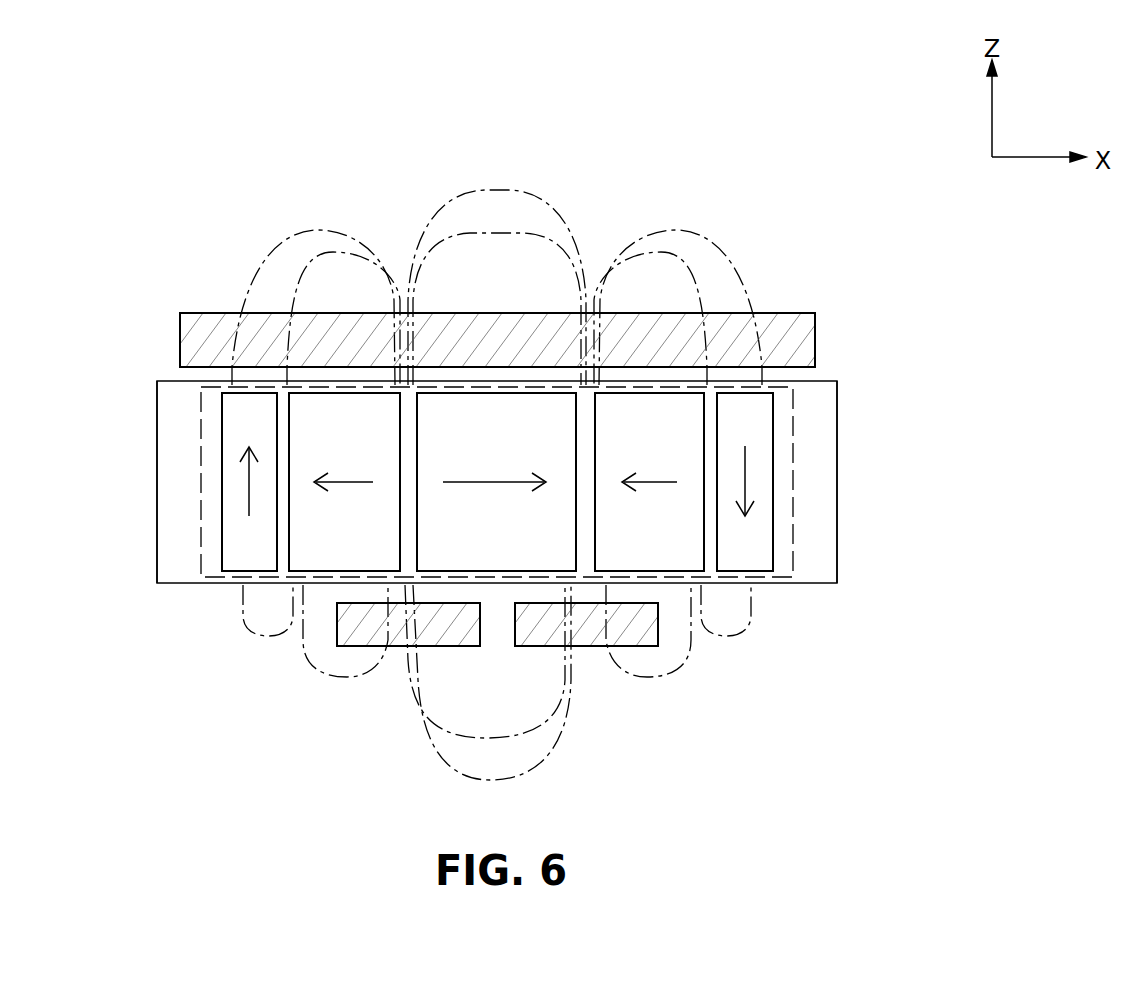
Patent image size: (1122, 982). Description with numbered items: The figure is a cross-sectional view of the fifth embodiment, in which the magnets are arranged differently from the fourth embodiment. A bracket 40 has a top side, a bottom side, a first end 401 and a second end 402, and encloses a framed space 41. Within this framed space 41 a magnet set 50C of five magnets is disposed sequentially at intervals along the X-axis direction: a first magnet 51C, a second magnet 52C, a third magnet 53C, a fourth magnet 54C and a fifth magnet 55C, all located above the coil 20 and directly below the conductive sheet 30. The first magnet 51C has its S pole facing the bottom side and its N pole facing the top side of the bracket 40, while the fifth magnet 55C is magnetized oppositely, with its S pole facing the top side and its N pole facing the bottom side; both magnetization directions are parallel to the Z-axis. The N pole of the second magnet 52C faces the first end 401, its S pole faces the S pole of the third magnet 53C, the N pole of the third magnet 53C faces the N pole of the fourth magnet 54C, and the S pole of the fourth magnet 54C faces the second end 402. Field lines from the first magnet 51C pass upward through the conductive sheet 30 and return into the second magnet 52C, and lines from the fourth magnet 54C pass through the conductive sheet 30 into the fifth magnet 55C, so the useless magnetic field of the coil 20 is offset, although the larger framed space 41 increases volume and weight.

The coil 20 is at (592, 637).
The conductive sheet 30 is at (792, 318).
The bracket 40 is at (178, 443).
The framed space 41 is at (780, 433).
The first end 401 is at (157, 536).
The second end 402 is at (837, 537).
The magnet set 50C is at (337, 133).
The first magnet 51C is at (267, 408).
The second magnet 52C is at (338, 405).
The third magnet 53C is at (503, 413).
The fourth magnet 54C is at (638, 415).
The fifth magnet 55C is at (727, 403).